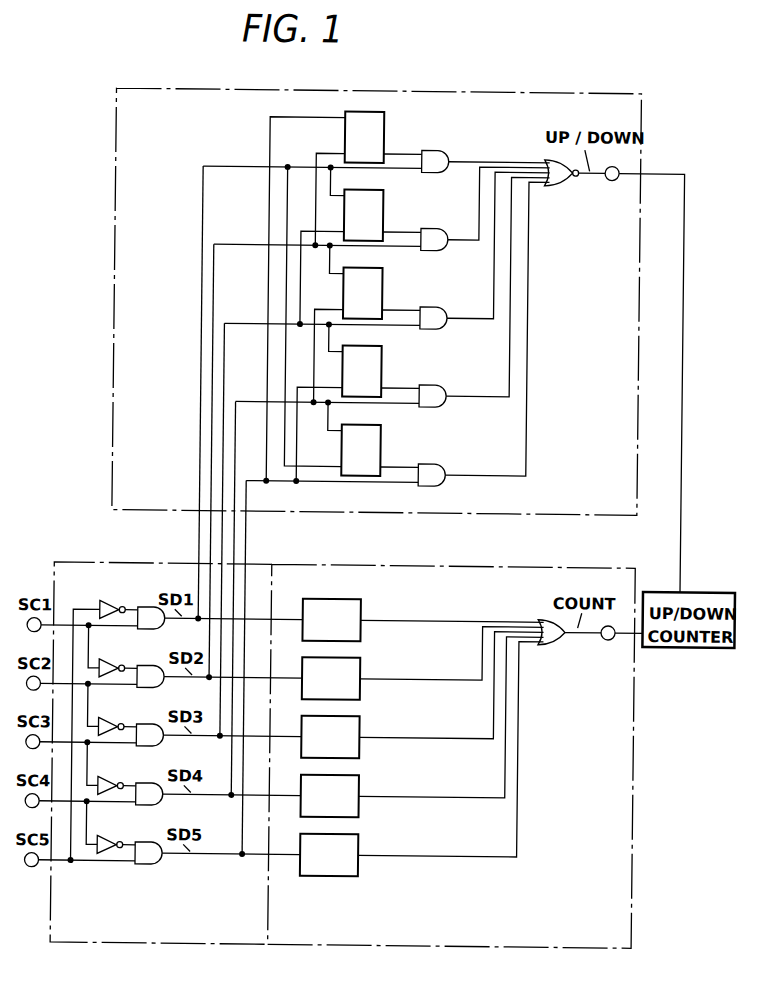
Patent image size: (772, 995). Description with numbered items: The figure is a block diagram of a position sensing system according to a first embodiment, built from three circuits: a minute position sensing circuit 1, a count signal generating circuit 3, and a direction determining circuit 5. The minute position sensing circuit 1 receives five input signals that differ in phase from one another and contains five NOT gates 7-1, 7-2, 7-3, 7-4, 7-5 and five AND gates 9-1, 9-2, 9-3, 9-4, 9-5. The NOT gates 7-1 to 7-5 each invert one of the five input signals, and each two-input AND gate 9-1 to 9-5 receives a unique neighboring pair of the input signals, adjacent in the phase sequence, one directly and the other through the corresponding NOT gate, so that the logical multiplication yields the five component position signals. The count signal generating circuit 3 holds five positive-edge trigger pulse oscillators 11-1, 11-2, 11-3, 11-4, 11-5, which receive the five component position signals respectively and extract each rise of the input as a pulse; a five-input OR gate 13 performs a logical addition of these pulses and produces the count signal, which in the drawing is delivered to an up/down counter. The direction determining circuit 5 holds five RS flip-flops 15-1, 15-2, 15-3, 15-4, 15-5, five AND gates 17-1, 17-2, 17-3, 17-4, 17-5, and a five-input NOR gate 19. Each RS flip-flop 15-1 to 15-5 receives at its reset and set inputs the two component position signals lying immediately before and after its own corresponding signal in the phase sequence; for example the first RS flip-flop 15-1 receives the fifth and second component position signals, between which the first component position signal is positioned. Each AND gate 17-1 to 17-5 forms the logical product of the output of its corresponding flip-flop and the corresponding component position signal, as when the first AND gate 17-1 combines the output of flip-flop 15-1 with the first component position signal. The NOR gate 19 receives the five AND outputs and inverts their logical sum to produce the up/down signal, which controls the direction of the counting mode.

The minute position sensing circuit 1 is at (94, 563).
The count signal generating circuit 3 is at (556, 566).
The direction determining circuit 5 is at (484, 514).
The NOT gate 7-1 is at (113, 603).
The NOT gate 7-2 is at (113, 662).
The NOT gate 7-3 is at (113, 720).
The NOT gate 7-4 is at (113, 779).
The NOT gate 7-5 is at (113, 838).
The AND gate 9-1 is at (161, 632).
The AND gate 9-2 is at (161, 690).
The AND gate 9-3 is at (161, 748).
The AND gate 9-4 is at (161, 808).
The AND gate 9-5 is at (161, 866).
The positive-edge trigger pulse oscillator 11-1 is at (364, 609).
The positive-edge trigger pulse oscillator 11-2 is at (364, 668).
The positive-edge trigger pulse oscillator 11-3 is at (364, 726).
The positive-edge trigger pulse oscillator 11-4 is at (364, 785).
The positive-edge trigger pulse oscillator 11-5 is at (364, 844).
The five-input OR gate 13 is at (558, 642).
The RS flip-flop 15-1 is at (384, 123).
The RS flip-flop 15-2 is at (384, 201).
The RS flip-flop 15-3 is at (384, 279).
The RS flip-flop 15-4 is at (384, 357).
The RS flip-flop 15-5 is at (384, 436).
The AND gate 17-1 is at (440, 146).
The AND gate 17-2 is at (440, 224).
The AND gate 17-3 is at (440, 302).
The AND gate 17-4 is at (440, 380).
The AND gate 17-5 is at (440, 460).
The five-input NOR gate 19 is at (566, 185).